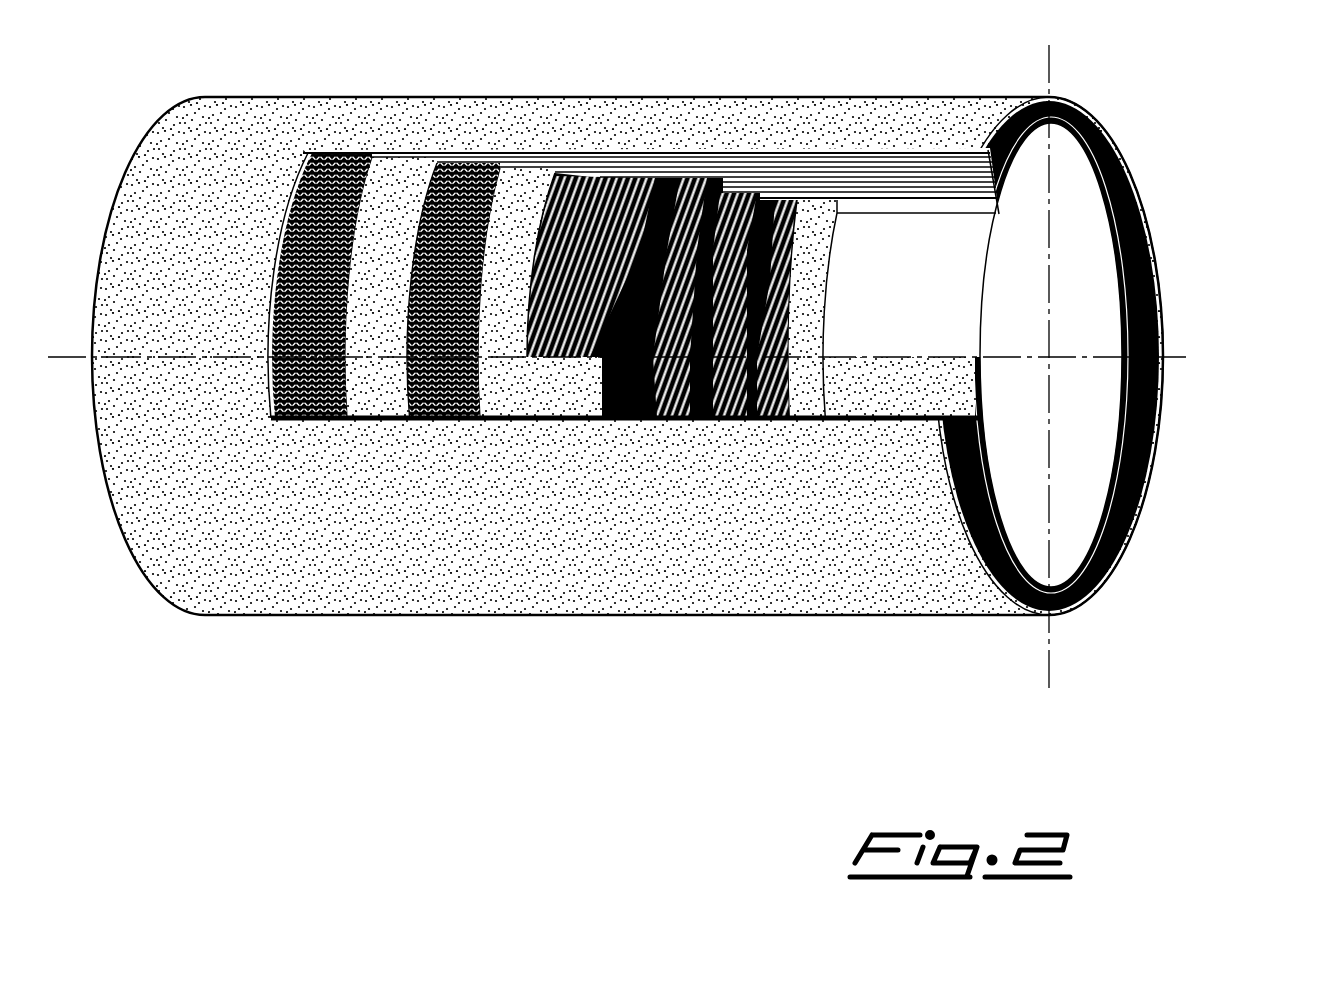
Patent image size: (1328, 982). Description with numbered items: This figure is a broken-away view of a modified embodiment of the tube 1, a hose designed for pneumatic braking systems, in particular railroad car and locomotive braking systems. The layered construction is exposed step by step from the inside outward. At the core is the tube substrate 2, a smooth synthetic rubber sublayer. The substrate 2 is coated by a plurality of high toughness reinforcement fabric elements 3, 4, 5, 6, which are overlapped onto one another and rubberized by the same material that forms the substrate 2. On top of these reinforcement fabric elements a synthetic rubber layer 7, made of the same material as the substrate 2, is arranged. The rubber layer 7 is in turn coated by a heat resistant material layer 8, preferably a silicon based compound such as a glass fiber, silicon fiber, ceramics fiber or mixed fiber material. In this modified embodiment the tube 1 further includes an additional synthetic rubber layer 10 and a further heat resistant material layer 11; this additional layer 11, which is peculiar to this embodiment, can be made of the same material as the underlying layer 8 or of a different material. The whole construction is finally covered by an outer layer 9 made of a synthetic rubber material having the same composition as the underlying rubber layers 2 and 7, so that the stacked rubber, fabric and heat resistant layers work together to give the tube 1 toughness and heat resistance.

The tube 1 is at (1178, 178).
The tube substrate 2 is at (878, 378).
The reinforcement fabric element 3 is at (772, 423).
The reinforcement fabric element 4 is at (720, 423).
The reinforcement fabric element 5 is at (677, 423).
The reinforcement fabric element 6 is at (637, 423).
The synthetic rubber layer 7 is at (532, 397).
The heat resistant material layer 8 is at (447, 398).
The outer layer 9 is at (208, 400).
The additional synthetic rubber layer 10 is at (374, 397).
The further heat resistant material layer 11 is at (307, 398).